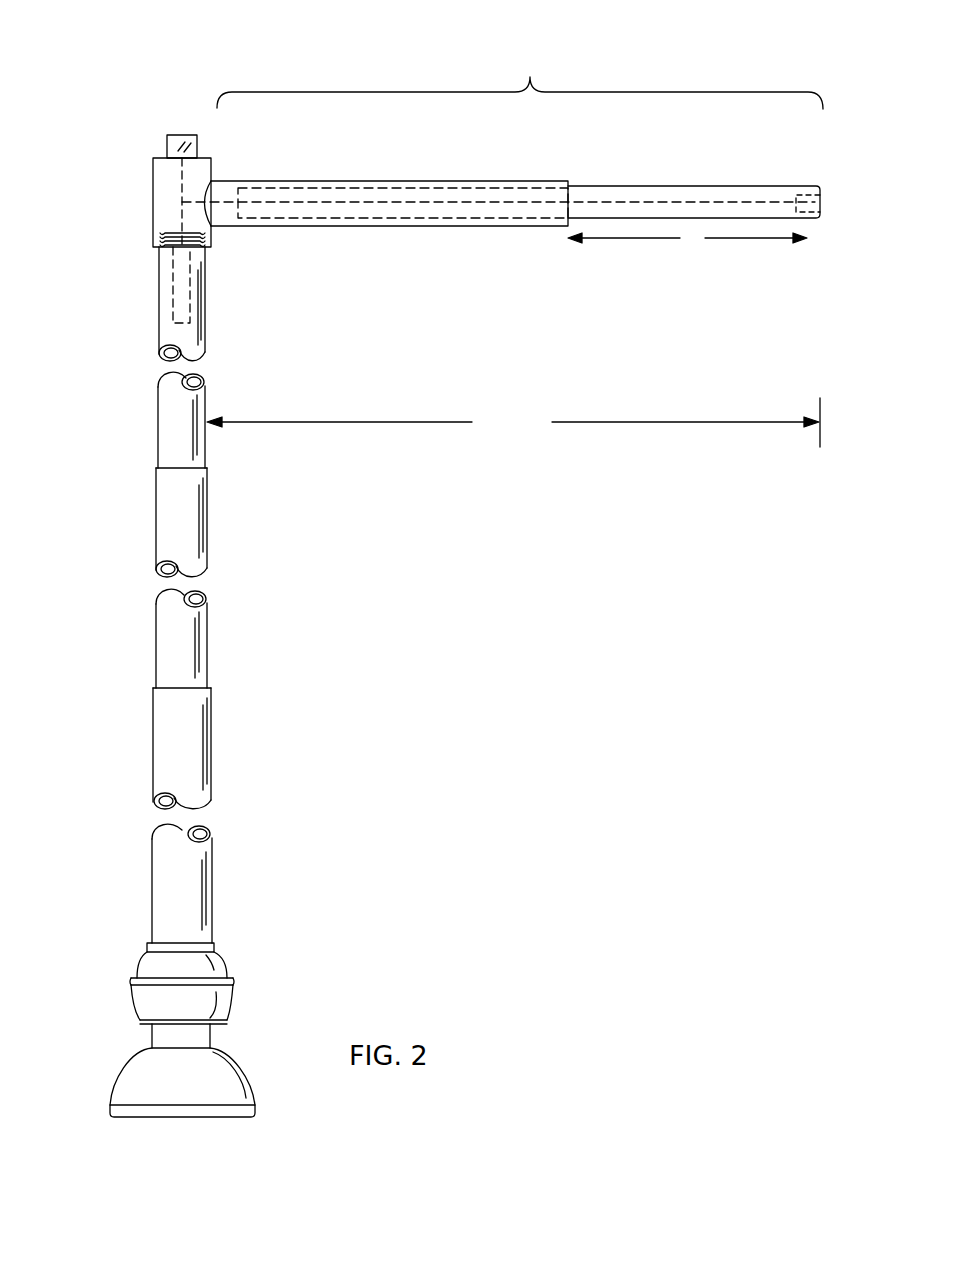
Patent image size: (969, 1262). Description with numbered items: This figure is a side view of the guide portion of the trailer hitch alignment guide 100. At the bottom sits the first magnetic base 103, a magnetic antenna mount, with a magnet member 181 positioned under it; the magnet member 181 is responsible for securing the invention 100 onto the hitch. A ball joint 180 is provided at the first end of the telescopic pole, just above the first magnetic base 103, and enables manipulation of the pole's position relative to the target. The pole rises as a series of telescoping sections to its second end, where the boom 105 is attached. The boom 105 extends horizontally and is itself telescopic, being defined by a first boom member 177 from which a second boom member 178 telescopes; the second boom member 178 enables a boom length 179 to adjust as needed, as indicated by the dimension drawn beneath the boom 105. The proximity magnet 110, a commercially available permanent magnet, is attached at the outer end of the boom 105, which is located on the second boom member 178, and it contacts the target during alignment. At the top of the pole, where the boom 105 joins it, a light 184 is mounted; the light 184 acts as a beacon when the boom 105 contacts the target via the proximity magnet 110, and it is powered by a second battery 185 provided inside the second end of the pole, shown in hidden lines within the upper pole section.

The trailer hitch alignment guide 100 is at (82, 84).
The first magnetic base 103 is at (245, 1073).
The boom 105 is at (520, 74).
The proximity magnet 110 is at (800, 200).
The first boom member 177 is at (458, 182).
The second boom member 178 is at (641, 187).
The boom length 179 is at (513, 422).
The ball joint 180 is at (123, 938).
The magnet member 181 is at (262, 1118).
The light 184 is at (168, 136).
The second battery 185 is at (173, 283).